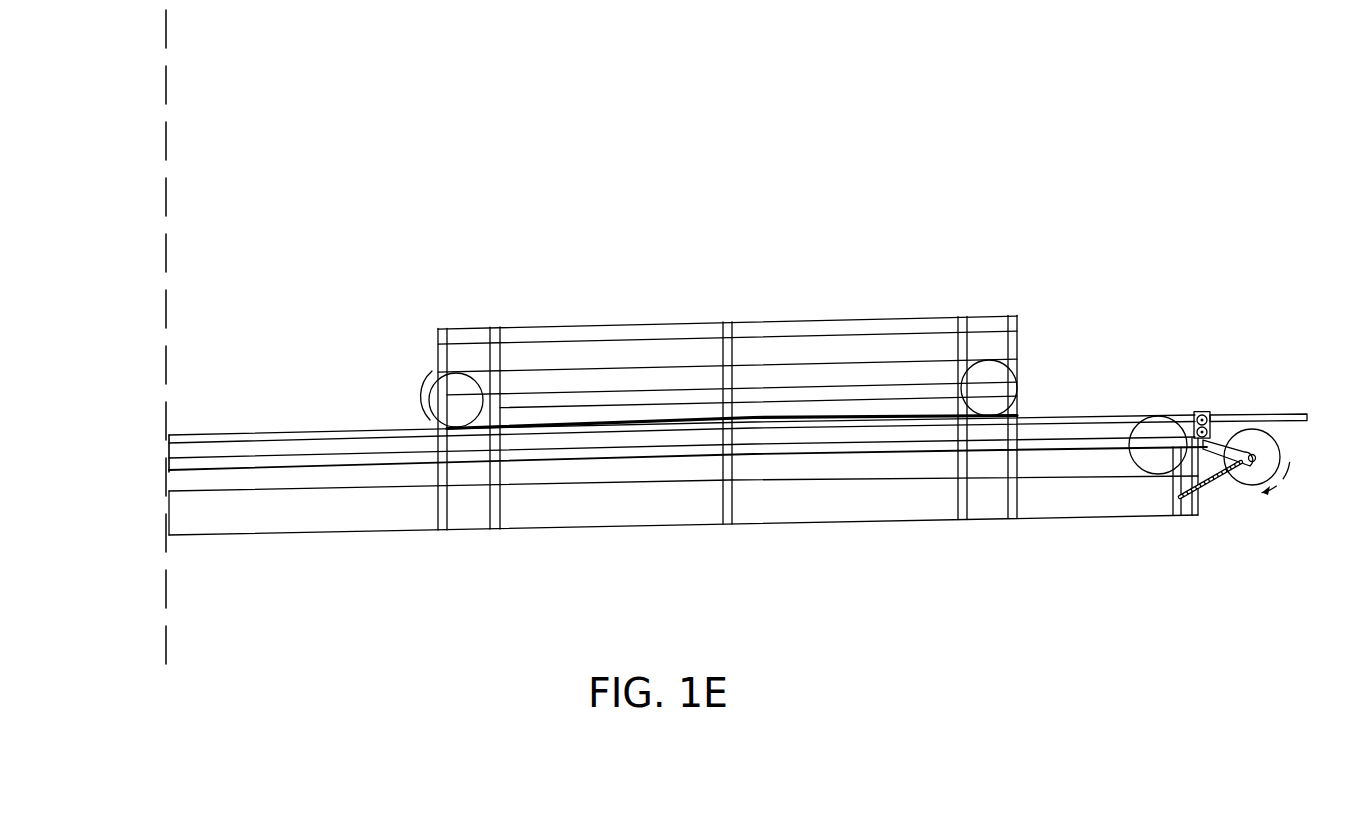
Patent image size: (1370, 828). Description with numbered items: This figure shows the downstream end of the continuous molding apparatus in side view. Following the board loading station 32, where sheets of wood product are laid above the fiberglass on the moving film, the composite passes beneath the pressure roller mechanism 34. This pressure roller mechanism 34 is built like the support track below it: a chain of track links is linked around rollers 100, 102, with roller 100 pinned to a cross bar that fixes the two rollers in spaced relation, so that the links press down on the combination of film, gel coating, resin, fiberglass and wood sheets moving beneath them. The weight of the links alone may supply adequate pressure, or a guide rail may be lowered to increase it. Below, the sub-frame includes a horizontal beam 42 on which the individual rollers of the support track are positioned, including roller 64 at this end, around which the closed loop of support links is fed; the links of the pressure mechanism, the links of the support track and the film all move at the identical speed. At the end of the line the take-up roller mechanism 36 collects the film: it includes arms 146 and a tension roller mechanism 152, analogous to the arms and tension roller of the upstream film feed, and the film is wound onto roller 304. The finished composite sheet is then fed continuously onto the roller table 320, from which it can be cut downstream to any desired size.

The board loading station 32 is at (284, 410).
The pressure roller mechanism 34 is at (543, 365).
The take-up roller mechanism 36 is at (1188, 376).
The horizontal beam 42 is at (755, 452).
The roller 64 is at (1148, 462).
The roller 100 is at (458, 387).
The roller 102 is at (998, 377).
The arm 146 is at (1233, 478).
The tension roller mechanism 152 is at (1197, 412).
The roller 304 is at (1273, 457).
The roller table 320 is at (1258, 412).